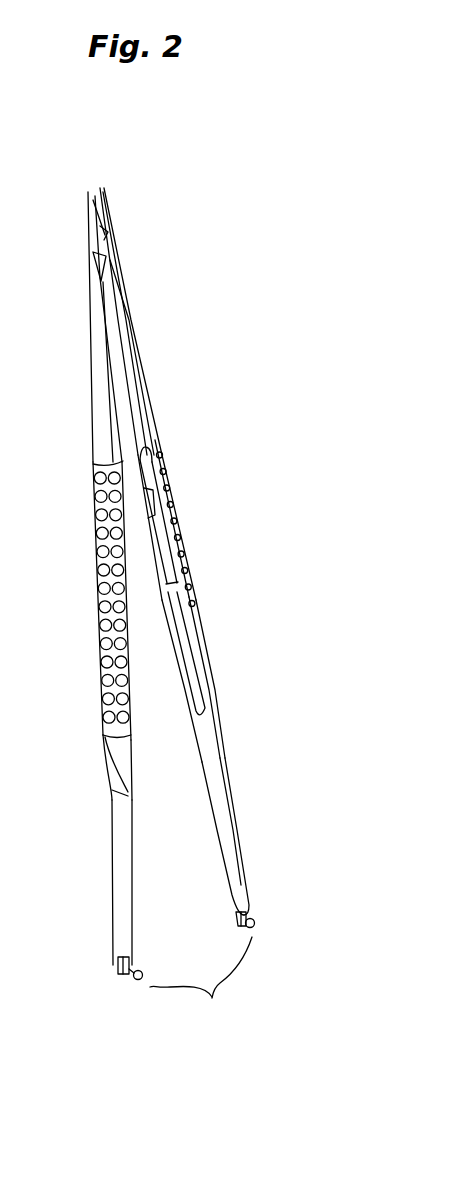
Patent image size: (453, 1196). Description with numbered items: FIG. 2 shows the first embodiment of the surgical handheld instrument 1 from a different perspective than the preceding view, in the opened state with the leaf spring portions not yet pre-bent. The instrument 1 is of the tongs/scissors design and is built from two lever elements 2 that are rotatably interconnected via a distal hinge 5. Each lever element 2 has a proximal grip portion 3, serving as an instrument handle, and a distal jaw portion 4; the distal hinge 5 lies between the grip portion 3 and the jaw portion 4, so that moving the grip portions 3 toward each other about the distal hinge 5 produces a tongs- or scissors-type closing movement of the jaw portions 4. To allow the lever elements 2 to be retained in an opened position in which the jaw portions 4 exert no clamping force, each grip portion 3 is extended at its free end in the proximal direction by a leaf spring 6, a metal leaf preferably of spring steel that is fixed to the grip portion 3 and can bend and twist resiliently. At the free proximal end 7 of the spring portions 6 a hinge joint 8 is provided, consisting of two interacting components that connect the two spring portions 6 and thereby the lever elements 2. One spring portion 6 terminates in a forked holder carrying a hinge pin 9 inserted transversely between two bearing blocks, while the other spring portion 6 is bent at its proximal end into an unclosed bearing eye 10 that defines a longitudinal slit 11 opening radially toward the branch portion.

The surgical handheld instrument 1 is at (172, 603).
The lever element 2 is at (176, 603).
The grip portion 3 is at (93, 642).
The jaw portion 4 is at (105, 200).
The distal hinge 5 is at (110, 258).
The leaf spring 6 is at (103, 808).
The free proximal end 7 is at (114, 922).
The hinge joint 8 is at (201, 991).
The hinge pin 9 is at (117, 972).
The bearing eye 10 is at (232, 923).
The longitudinal slit 11 is at (250, 919).